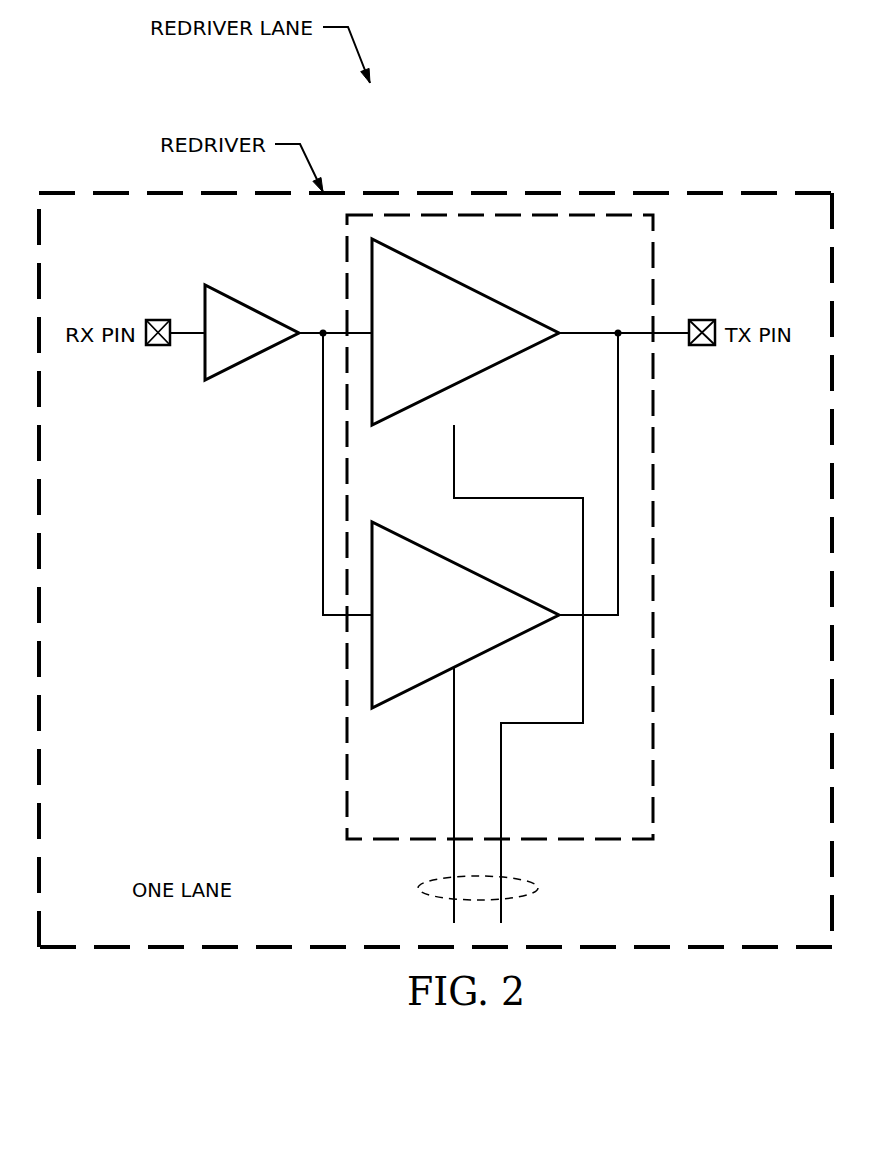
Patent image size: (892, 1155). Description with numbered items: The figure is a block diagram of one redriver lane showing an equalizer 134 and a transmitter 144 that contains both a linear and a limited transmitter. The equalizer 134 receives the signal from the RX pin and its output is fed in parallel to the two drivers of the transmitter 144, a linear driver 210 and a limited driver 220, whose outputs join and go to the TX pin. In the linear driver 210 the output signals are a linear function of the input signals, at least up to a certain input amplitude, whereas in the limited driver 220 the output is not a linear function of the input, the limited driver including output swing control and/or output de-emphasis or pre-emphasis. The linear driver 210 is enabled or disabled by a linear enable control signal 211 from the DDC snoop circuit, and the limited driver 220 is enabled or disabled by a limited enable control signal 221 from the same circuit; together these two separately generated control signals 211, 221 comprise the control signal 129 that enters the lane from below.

The equalizer 134 is at (253, 308).
The transmitter 144 is at (618, 307).
The linear driver 210 is at (464, 284).
The limited driver 220 is at (466, 567).
The control signal 211 is at (501, 792).
The control signal 221 is at (453, 792).
The control signal 129 is at (399, 902).